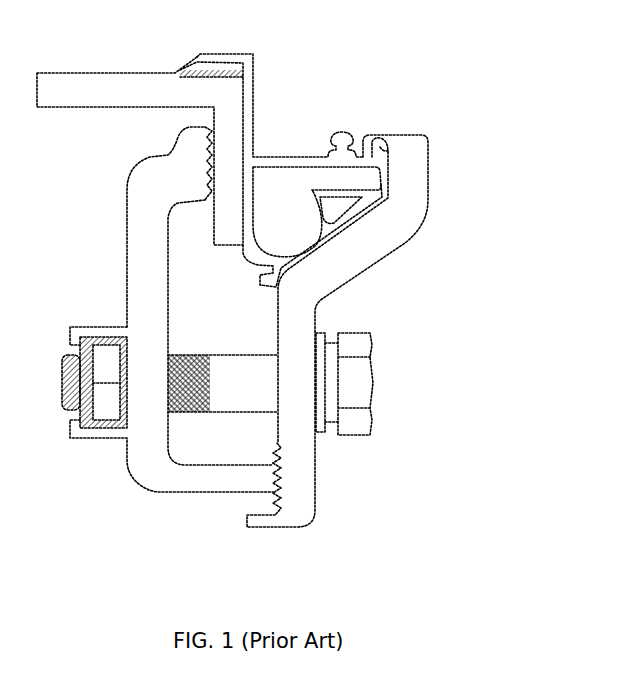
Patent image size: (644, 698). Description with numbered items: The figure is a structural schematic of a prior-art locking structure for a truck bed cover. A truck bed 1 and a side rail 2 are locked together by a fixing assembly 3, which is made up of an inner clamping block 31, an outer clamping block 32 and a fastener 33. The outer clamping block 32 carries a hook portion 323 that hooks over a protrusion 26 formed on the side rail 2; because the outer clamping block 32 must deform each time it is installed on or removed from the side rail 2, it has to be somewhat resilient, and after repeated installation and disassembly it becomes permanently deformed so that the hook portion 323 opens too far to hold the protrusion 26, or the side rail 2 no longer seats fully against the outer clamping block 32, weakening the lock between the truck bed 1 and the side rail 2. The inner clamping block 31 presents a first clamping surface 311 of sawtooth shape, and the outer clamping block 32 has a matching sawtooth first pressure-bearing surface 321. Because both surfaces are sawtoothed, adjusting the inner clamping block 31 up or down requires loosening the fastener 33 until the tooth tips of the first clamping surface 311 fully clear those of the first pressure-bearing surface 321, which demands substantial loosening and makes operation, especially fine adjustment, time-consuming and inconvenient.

The truck bed 1 is at (121, 80).
The side rail 2 is at (336, 108).
The hook portion 323 is at (372, 150).
The protrusion 26 is at (390, 149).
The inner clamping block 31 is at (137, 247).
The outer clamping block 32 is at (367, 256).
The fastener 33 is at (360, 384).
The first clamping surface 311 is at (270, 474).
The first pressure-bearing surface 321 is at (280, 450).
The fixing assembly 3 is at (192, 535).